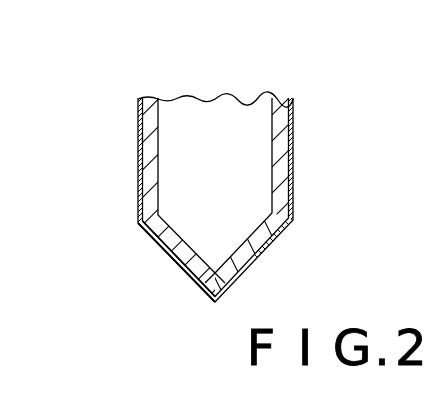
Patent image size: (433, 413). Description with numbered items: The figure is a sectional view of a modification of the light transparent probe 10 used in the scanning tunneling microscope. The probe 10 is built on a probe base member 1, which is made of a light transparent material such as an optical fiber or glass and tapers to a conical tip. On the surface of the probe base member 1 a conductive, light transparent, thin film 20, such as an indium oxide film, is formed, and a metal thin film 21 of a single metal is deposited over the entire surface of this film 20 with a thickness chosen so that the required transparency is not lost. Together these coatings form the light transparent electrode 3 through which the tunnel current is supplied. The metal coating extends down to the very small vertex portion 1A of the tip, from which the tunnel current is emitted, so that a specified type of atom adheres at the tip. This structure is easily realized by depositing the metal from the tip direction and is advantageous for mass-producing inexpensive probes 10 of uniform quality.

The light transparent probe 10 is at (216, 159).
The light transparent electrode 3 is at (216, 197).
The conductive, light transparent, thin film 20 is at (148, 132).
The probe base member 1 is at (190, 177).
The metal thin film 21 is at (73, 85).
The vertex portion 1A is at (213, 275).